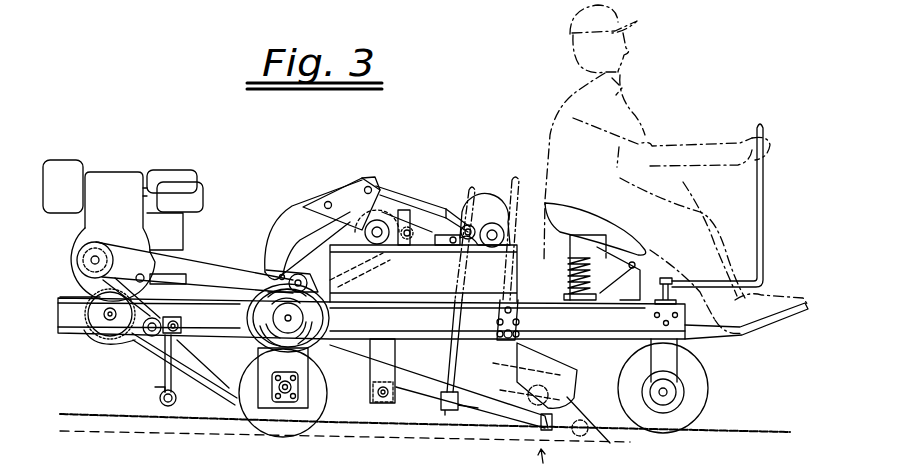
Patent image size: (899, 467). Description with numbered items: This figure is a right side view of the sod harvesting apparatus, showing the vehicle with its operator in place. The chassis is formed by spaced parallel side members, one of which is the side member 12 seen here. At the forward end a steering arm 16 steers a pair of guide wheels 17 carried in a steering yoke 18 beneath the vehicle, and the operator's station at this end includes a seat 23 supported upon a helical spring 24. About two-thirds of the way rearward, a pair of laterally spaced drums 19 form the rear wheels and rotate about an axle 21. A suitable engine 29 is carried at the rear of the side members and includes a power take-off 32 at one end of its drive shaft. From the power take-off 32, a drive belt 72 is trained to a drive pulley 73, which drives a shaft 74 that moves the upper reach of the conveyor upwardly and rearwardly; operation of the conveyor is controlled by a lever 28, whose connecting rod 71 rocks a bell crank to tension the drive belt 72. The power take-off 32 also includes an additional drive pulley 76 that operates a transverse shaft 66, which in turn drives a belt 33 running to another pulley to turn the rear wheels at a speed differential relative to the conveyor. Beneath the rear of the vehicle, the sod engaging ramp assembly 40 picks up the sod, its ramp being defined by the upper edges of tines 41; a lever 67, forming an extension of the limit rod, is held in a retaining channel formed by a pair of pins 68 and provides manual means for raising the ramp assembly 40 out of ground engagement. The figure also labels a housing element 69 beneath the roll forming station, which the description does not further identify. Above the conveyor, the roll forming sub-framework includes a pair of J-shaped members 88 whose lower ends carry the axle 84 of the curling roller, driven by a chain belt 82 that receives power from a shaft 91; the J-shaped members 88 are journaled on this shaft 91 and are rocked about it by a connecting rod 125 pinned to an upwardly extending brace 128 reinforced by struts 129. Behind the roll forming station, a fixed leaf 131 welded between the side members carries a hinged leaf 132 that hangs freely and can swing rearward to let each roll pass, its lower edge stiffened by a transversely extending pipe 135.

The side member 12 is at (615, 334).
The steering arm 16 is at (763, 243).
The guide wheel 17 is at (700, 397).
The steering yoke 18 is at (668, 377).
The drum 19 is at (332, 407).
The axle 21 is at (285, 392).
The seat 23 is at (600, 231).
The helical spring 24 is at (568, 275).
The lever 28 is at (505, 298).
The engine 29 is at (141, 164).
The power take-off 32 is at (75, 250).
The belt 33 is at (222, 396).
The sod engaging ramp assembly 40 is at (527, 458).
The tine 41 is at (577, 412).
The shaft 66 is at (106, 315).
The lever 67 is at (445, 322).
The pin 68 is at (478, 306).
The housing 69 is at (348, 302).
The connecting rod 71 is at (204, 322).
The drive belt 72 is at (204, 273).
The drive pulley 73 is at (316, 348).
The shaft 74 is at (292, 318).
The drive pulley 76 is at (99, 345).
The chain belt 82 is at (290, 222).
The axle 84 is at (290, 280).
The J-shaped member 88 is at (288, 213).
The shaft 91 is at (383, 192).
The connecting rod 125 is at (396, 190).
The brace 128 is at (363, 180).
The strut 129 is at (328, 203).
The leaf 131 is at (183, 340).
The leaf 132 is at (165, 368).
The pipe 135 is at (158, 400).